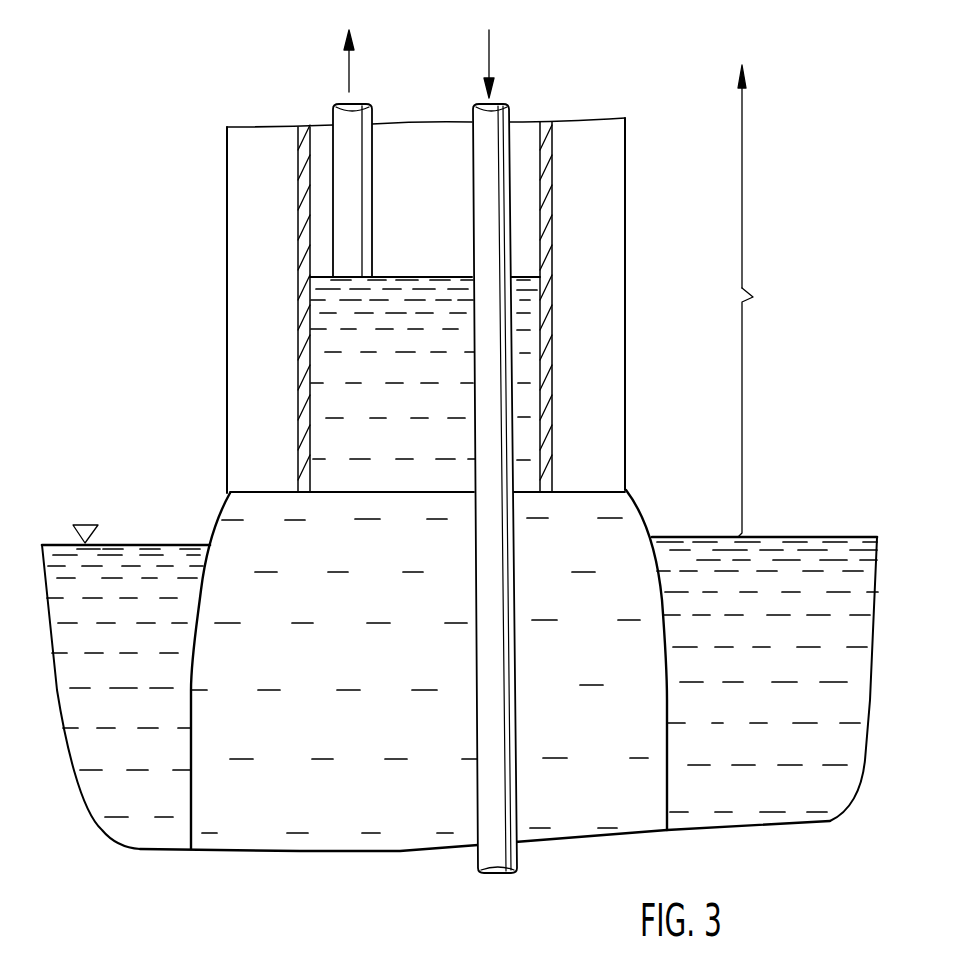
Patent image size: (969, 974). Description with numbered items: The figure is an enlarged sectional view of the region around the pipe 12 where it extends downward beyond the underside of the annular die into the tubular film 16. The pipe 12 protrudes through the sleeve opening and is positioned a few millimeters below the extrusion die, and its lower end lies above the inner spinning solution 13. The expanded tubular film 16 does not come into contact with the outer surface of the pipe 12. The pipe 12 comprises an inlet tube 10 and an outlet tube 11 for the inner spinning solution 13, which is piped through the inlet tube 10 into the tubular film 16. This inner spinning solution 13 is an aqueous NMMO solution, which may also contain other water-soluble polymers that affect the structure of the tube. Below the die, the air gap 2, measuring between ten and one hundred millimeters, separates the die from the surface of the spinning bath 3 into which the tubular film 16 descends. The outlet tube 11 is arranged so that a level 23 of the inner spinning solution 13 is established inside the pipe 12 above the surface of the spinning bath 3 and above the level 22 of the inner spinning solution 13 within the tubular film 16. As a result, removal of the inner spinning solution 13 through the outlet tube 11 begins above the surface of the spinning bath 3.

The air gap 2 is at (753, 297).
The spinning bath 3 is at (145, 590).
The inlet tube 10 is at (499, 133).
The outlet tube 11 is at (338, 128).
The pipe 12 is at (547, 231).
The inner spinning solution 13 is at (270, 833).
The tubular film 16 is at (667, 705).
The level of the inner spinning solution in the tubular film 22 is at (592, 485).
The level in the pipe 23 is at (452, 267).